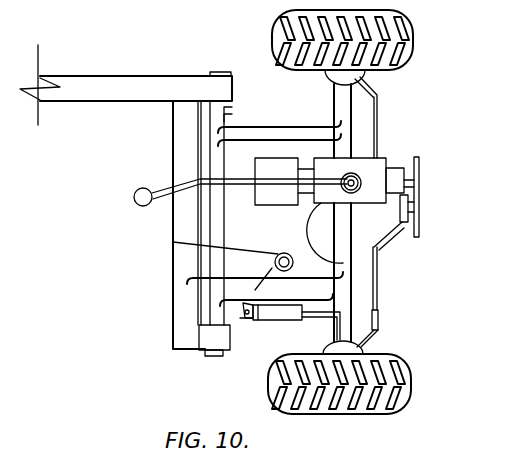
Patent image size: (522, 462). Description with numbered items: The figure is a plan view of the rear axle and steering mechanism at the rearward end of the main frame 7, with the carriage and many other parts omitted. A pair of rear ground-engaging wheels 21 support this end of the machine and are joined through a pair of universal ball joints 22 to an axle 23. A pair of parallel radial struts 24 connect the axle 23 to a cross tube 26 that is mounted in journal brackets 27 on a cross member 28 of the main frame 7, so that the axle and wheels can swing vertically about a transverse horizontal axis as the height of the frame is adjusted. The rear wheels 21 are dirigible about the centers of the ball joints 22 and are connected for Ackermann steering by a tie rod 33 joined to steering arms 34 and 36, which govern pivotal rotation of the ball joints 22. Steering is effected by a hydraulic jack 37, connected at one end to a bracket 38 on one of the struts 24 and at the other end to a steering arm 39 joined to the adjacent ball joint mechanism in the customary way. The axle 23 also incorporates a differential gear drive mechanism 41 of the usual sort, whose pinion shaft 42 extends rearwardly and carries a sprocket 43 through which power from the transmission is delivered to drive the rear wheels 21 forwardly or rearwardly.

The main frame 7 is at (115, 77).
The rear ground-engaging wheels 21 is at (414, 40).
The universal ball joints 22 is at (322, 347).
The axle 23 is at (358, 302).
The radial struts 24 is at (238, 124).
The cross tube 26 is at (229, 118).
The journal brackets 27 is at (212, 87).
The cross member 28 is at (172, 327).
The tie rod 33 is at (378, 269).
The steering arm 34 is at (376, 84).
The steering arm 36 is at (377, 338).
The hydraulic jack 37 is at (253, 318).
The bracket 38 is at (242, 311).
The steering arm 39 is at (337, 328).
The differential gear drive mechanism 41 is at (307, 233).
The pinion shaft 42 is at (418, 197).
The sprocket 43 is at (418, 221).